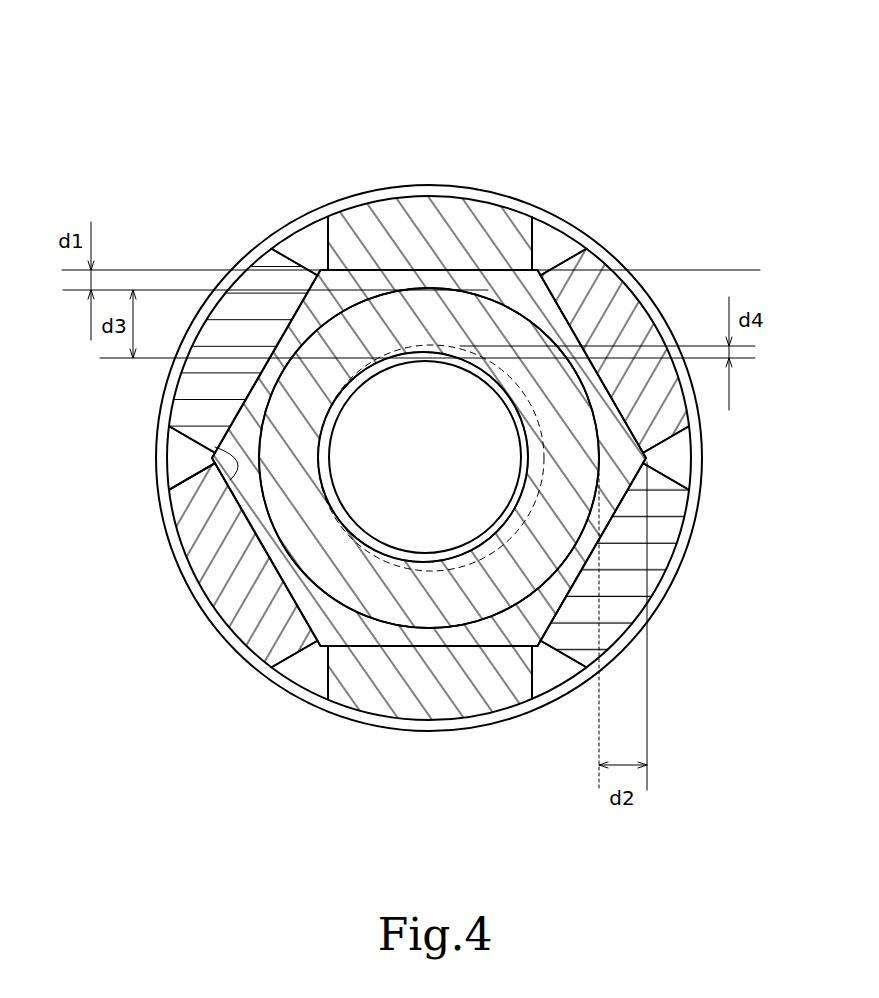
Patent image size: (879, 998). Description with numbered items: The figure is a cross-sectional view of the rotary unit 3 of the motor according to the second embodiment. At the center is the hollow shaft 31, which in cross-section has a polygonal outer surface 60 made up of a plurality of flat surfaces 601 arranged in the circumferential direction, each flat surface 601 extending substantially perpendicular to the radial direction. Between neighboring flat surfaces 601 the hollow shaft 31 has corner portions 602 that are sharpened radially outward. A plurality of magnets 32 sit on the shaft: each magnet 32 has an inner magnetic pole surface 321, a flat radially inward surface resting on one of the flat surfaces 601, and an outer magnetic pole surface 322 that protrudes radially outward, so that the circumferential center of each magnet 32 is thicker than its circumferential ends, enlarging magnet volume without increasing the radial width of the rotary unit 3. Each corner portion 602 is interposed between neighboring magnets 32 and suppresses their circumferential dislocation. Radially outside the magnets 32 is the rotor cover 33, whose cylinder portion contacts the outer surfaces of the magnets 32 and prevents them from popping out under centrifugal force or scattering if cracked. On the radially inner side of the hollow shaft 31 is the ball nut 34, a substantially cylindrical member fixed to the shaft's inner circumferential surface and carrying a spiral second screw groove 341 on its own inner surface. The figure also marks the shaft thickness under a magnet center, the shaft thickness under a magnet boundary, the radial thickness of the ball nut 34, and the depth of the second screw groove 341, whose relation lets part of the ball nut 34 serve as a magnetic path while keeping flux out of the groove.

The rotary unit 3 is at (356, 110).
The hollow shaft 31 is at (436, 282).
The magnets 32 is at (500, 231).
The inner magnetic pole surface 321 is at (206, 452).
The outer magnetic pole surface 322 is at (177, 490).
The rotor cover 33 is at (500, 724).
The ball nut 34 is at (366, 596).
The second screw groove 341 is at (366, 378).
The outer surface 60 is at (395, 266).
The flat surfaces 601 is at (358, 268).
The corner portions 602 is at (541, 660).